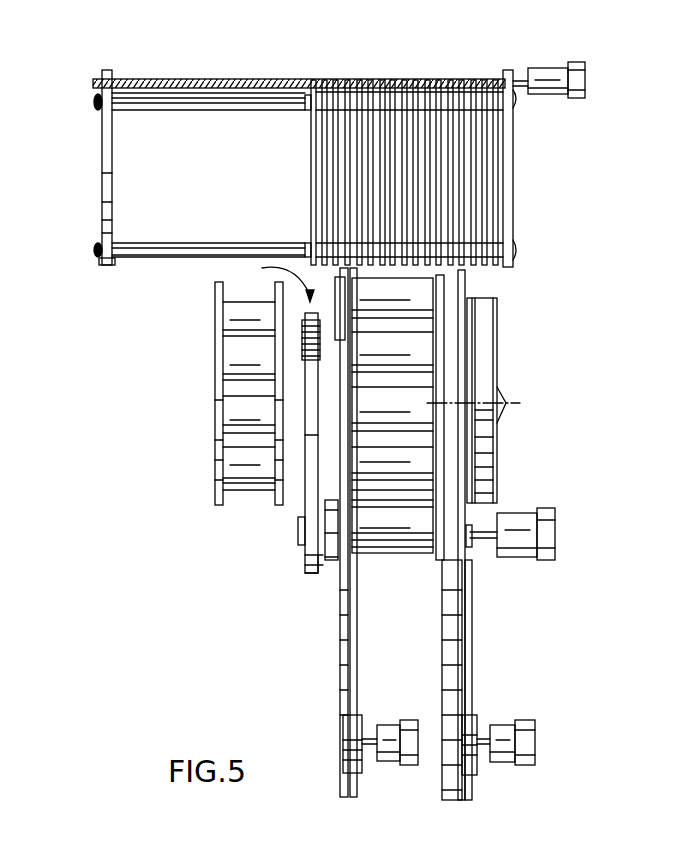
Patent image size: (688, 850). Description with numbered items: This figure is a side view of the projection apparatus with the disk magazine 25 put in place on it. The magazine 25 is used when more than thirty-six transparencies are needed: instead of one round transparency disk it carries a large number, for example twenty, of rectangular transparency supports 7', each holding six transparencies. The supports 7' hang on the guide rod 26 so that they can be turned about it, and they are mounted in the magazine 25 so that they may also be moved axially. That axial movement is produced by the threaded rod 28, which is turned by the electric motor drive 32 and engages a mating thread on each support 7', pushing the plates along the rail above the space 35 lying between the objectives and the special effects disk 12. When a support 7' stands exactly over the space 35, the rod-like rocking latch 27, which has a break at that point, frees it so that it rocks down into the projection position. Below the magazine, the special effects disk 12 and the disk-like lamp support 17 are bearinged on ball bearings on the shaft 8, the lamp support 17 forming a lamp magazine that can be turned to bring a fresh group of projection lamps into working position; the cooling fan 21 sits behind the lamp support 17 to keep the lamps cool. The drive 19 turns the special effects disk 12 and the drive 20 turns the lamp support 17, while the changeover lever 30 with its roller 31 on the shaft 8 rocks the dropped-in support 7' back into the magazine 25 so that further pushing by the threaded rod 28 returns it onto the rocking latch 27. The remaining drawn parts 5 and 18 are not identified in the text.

The roller 5 is at (223, 512).
The rectangular transparency support 7' is at (387, 168).
The shaft 8 is at (403, 545).
The special effects disk 12 is at (342, 676).
The lamp support 17 is at (466, 652).
The motor 18 is at (528, 557).
The drive for special effects disk 19 is at (406, 730).
The drive for lamp support 20 is at (504, 732).
The cooling fan 21 is at (497, 332).
The transparency magazine 25 is at (140, 264).
The guide rod 26 is at (205, 248).
The rocking latch 27 is at (125, 97).
The threaded rod 28 is at (122, 78).
The changeover lever 30 is at (312, 528).
The roller 31 is at (308, 323).
The drive for the threaded rod 32 is at (556, 97).
The space 35 is at (276, 281).